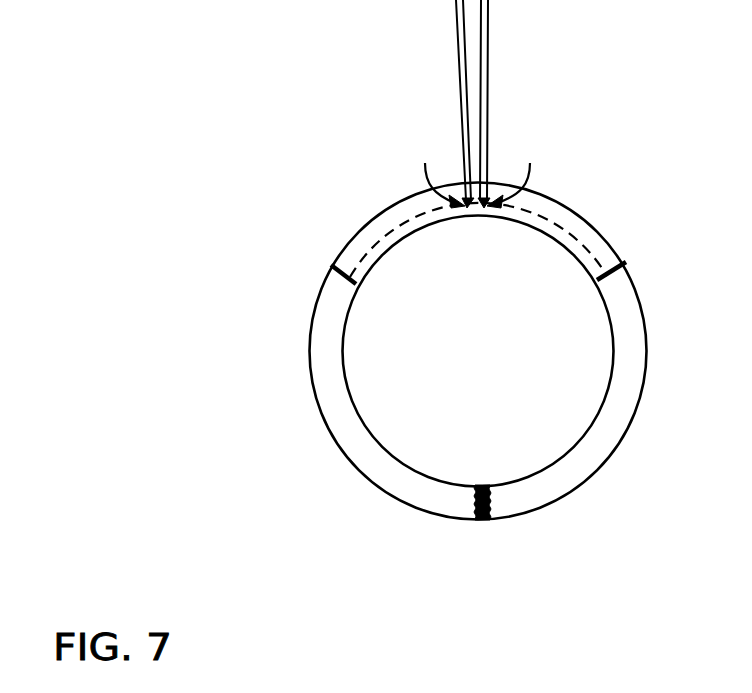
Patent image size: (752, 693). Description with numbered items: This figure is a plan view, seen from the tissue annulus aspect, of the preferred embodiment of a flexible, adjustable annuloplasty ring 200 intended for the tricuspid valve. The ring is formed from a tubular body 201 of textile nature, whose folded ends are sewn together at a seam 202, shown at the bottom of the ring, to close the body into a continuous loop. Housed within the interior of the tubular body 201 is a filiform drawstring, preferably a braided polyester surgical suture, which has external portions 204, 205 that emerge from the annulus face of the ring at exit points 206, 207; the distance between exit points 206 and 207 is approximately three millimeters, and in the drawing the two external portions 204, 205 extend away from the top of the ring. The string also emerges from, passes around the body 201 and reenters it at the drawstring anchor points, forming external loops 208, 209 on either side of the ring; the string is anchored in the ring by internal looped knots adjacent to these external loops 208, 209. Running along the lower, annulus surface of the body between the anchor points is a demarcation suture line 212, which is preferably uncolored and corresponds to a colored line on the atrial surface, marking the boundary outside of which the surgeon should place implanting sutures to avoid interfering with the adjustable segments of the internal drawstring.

The annuloplasty ring 200 is at (353, 467).
The tubular body 201 is at (327, 352).
The seam 202 is at (480, 523).
The external portion of string 204 is at (458, 62).
The external portion of string 205 is at (490, 100).
The exit point 206 is at (425, 166).
The exit point 207 is at (526, 166).
The external loop 208 is at (328, 268).
The external loop 209 is at (625, 262).
The demarcation suture line 212 is at (385, 230).